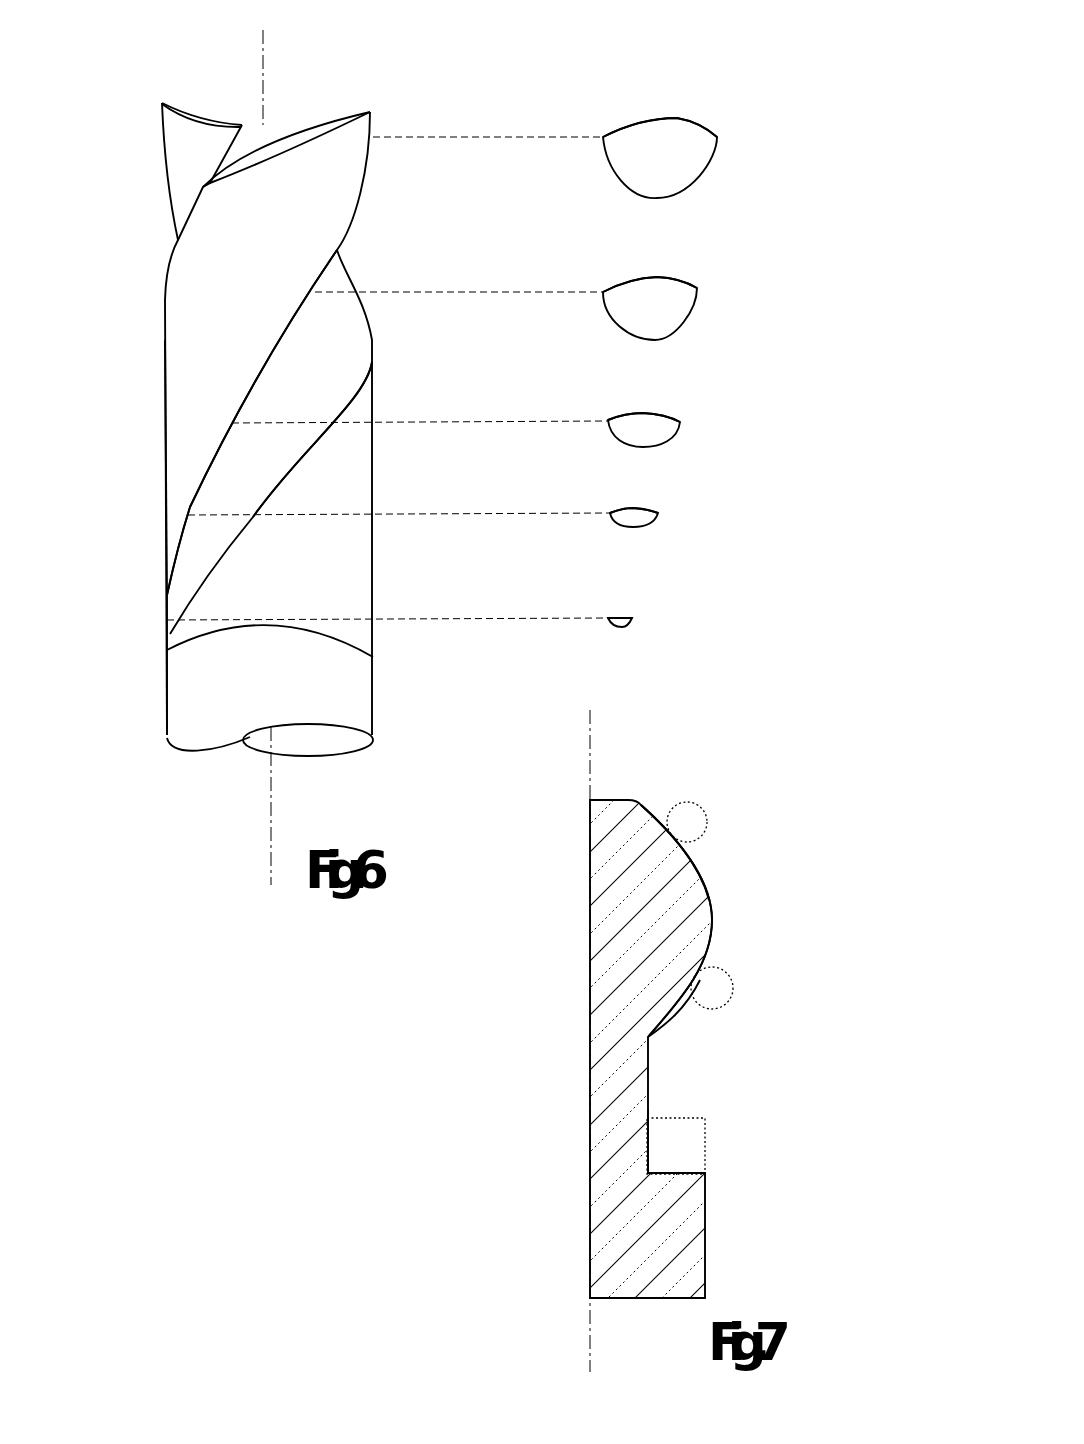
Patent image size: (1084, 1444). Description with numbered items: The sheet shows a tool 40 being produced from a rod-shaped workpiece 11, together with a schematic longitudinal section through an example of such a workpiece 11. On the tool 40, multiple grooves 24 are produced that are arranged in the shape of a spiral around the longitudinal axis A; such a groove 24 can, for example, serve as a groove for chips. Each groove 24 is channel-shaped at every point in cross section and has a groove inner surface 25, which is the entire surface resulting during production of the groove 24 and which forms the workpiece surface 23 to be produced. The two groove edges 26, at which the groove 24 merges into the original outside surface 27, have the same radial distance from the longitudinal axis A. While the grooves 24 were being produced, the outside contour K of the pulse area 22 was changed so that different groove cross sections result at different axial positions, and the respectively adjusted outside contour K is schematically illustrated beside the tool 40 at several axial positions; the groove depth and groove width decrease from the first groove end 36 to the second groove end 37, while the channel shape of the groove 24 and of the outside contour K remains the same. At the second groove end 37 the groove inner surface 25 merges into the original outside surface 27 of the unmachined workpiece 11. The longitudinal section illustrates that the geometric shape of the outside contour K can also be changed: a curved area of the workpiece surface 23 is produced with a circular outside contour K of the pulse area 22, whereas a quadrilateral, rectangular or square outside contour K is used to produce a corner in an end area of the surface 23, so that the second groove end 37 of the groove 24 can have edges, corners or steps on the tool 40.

In FIG. 6, the tool 40 is at (127, 153).
In FIG. 6, the first groove end 36 is at (383, 118).
In FIG. 6, the groove edges 26 is at (363, 195).
In FIG. 6, the workpiece surface 23 is at (303, 370).
In FIG. 7, the workpiece surface 23 is at (713, 912).
In FIG. 6, the groove inner surface 25 is at (312, 439).
In FIG. 6, the original outside surface 27 is at (198, 352).
In FIG. 6, the groove 24 is at (237, 462).
In FIG. 6, the second groove end 37 is at (163, 630).
In FIG. 6, the pulse area 22 is at (702, 192).
In FIG. 7, the pulse area 22 is at (693, 797).
In FIG. 6, the outside contour K is at (677, 118).
In FIG. 7, the outside contour K is at (707, 807).
In FIG. 6, the longitudinal axis A is at (270, 793).
In FIG. 7, the longitudinal axis A is at (593, 1337).
In FIG. 7, the workpiece 11 is at (677, 1240).